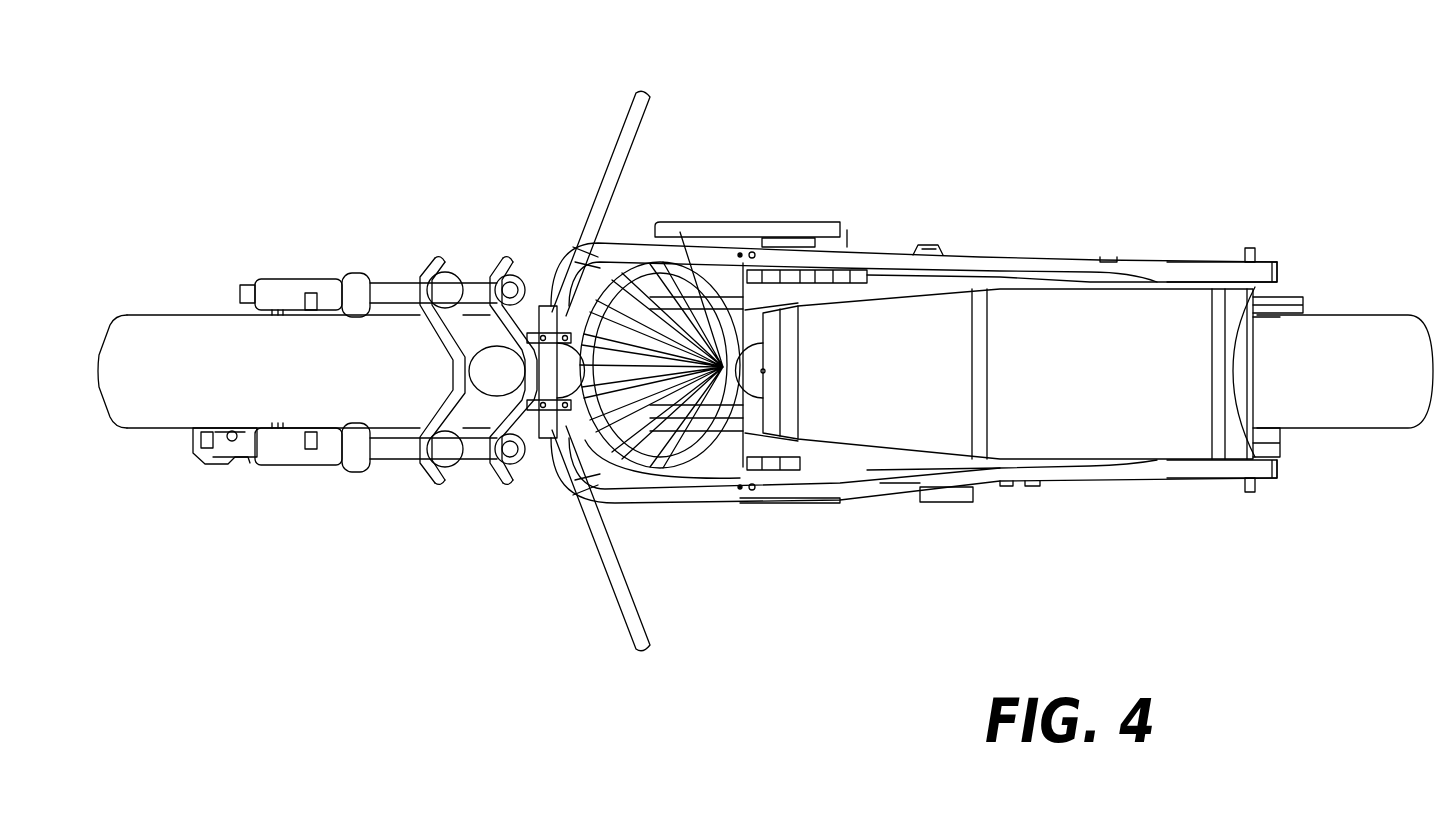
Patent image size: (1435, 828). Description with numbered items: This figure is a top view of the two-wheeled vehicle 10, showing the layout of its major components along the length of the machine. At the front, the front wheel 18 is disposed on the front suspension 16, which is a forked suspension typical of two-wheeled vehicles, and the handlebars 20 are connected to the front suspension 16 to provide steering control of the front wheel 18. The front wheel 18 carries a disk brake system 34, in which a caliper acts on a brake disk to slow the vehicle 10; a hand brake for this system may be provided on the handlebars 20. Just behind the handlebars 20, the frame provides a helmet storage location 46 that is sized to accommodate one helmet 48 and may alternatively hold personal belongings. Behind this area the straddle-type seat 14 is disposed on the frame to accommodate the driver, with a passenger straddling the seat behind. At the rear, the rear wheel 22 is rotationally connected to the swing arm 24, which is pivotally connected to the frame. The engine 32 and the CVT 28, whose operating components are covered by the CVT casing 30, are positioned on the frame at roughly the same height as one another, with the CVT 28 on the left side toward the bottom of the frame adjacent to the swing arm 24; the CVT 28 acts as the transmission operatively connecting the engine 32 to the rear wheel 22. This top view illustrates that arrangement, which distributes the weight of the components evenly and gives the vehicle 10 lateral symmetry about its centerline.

The two-wheeled vehicle 10 is at (956, 162).
The straddle-type seat 14 is at (1070, 340).
The front suspension 16 is at (410, 288).
The front wheel 18 is at (180, 313).
The handlebars 20 is at (627, 150).
The rear wheel 22 is at (1362, 337).
The swing arm 24 is at (1223, 261).
The CVT 28 is at (805, 530).
The CVT casing 30 is at (928, 502).
The engine 32 is at (777, 230).
The disk brake system 34 is at (217, 470).
The helmet storage location 46 is at (657, 358).
The helmet 48 is at (648, 418).